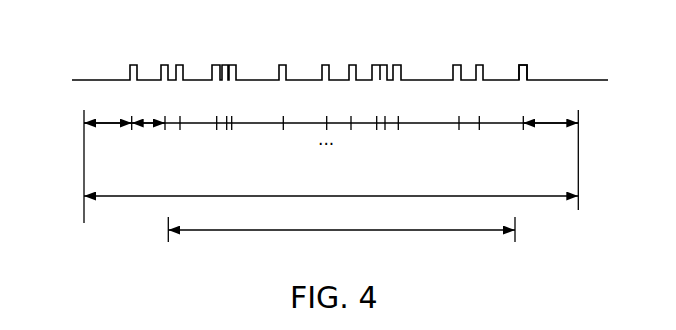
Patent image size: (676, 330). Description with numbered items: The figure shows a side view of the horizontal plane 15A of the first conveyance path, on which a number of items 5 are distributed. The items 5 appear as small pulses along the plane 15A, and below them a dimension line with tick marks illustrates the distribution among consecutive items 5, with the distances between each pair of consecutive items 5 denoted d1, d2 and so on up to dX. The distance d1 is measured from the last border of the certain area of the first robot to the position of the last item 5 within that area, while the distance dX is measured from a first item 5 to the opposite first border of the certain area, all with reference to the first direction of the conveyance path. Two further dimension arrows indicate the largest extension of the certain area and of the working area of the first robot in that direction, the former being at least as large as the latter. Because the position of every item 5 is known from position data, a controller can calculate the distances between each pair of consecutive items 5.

The horizontal plane 15A is at (92, 80).
The item 5 is at (527, 65).
The distance d1 is at (108, 136).
The distance d2 is at (148, 136).
The distance dX is at (550, 137).